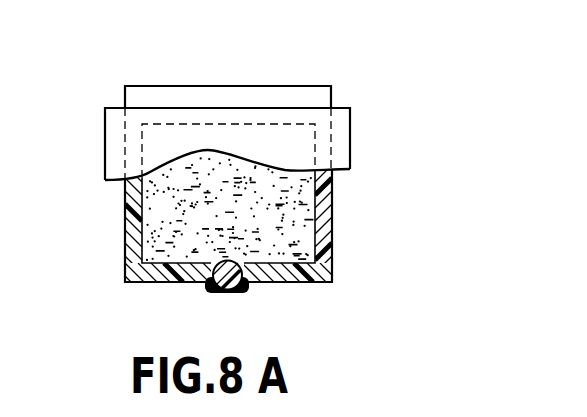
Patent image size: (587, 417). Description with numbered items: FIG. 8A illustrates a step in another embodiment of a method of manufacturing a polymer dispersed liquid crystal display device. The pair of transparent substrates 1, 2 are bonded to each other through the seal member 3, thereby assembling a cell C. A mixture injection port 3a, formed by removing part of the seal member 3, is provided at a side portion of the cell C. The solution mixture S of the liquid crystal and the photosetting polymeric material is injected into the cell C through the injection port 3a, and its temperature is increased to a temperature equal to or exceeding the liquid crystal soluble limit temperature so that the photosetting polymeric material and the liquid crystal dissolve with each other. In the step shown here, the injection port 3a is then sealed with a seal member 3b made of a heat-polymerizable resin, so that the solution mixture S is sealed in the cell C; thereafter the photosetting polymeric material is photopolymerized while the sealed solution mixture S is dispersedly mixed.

The transparent substrate 1 is at (183, 132).
The transparent substrate 2 is at (290, 101).
The seal member 3 is at (333, 222).
The mixture injection port 3a is at (210, 271).
The seal member 3b is at (242, 293).
The solution mixture S is at (157, 231).
The cell C is at (352, 146).